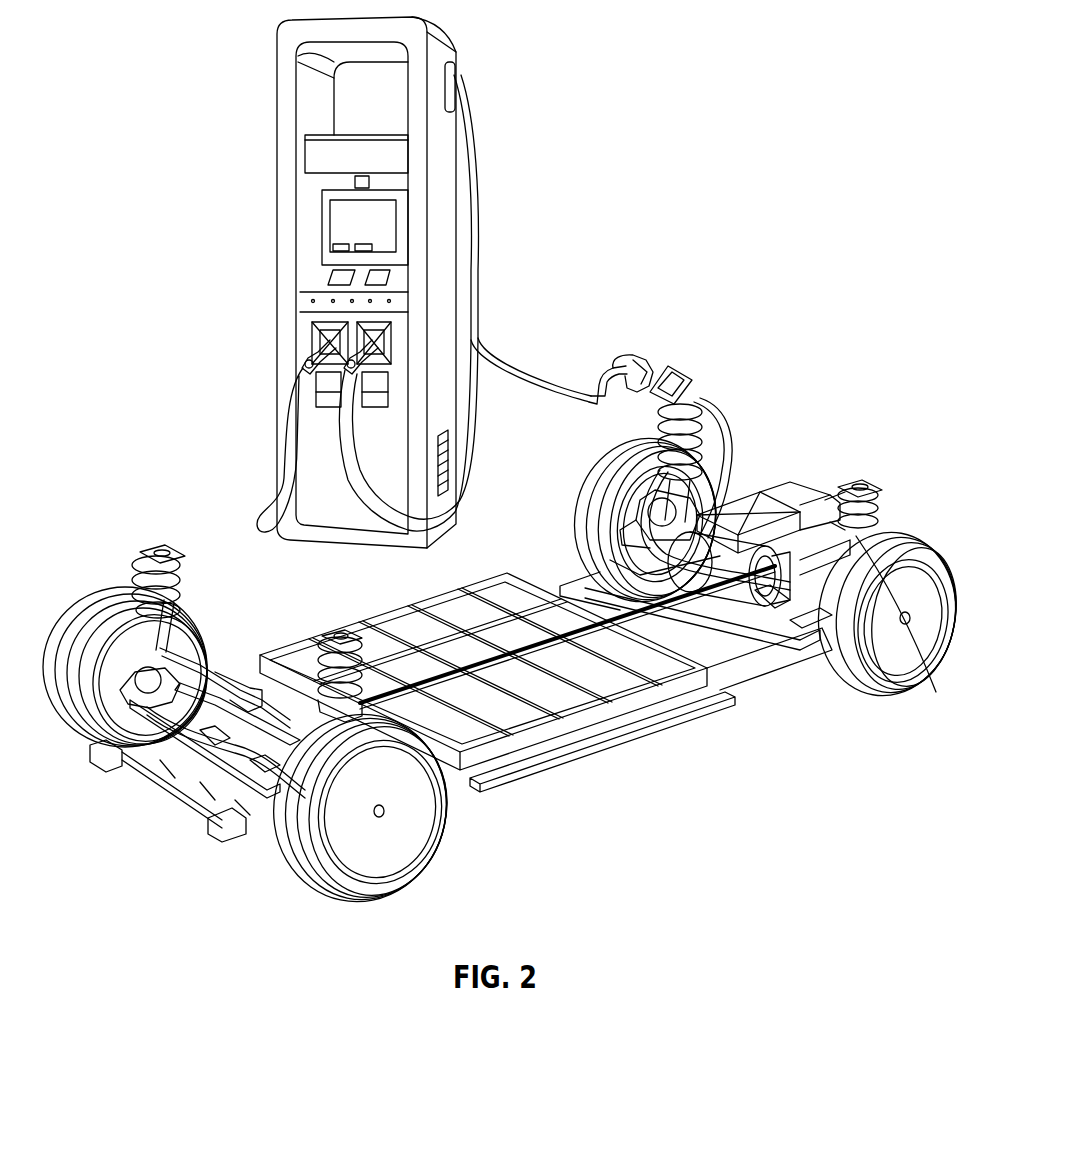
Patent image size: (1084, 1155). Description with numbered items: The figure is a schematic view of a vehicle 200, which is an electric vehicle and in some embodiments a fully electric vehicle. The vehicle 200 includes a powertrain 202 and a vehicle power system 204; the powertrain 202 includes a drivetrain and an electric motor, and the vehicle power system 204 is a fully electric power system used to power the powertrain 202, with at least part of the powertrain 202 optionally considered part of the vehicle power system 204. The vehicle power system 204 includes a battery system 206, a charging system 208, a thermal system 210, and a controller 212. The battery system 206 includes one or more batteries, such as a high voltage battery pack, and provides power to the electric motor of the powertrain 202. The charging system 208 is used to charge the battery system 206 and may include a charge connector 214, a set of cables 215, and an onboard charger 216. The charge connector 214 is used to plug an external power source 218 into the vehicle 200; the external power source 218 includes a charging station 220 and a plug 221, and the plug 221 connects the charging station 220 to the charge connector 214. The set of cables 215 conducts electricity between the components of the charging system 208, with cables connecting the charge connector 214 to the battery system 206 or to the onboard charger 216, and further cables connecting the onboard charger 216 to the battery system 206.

The vehicle 200 is at (505, 605).
The powertrain 202 is at (790, 648).
The vehicle power system 204 is at (497, 699).
The battery system 206 is at (458, 625).
The charging system 208 is at (708, 420).
The thermal system 210 is at (905, 625).
The controller 212 is at (820, 490).
The charge connector 214 is at (669, 359).
The set of cables 215 is at (723, 420).
The onboard charger 216 is at (646, 665).
The external power source 218 is at (426, 282).
The charging station 220 is at (286, 194).
The plug 221 is at (594, 352).